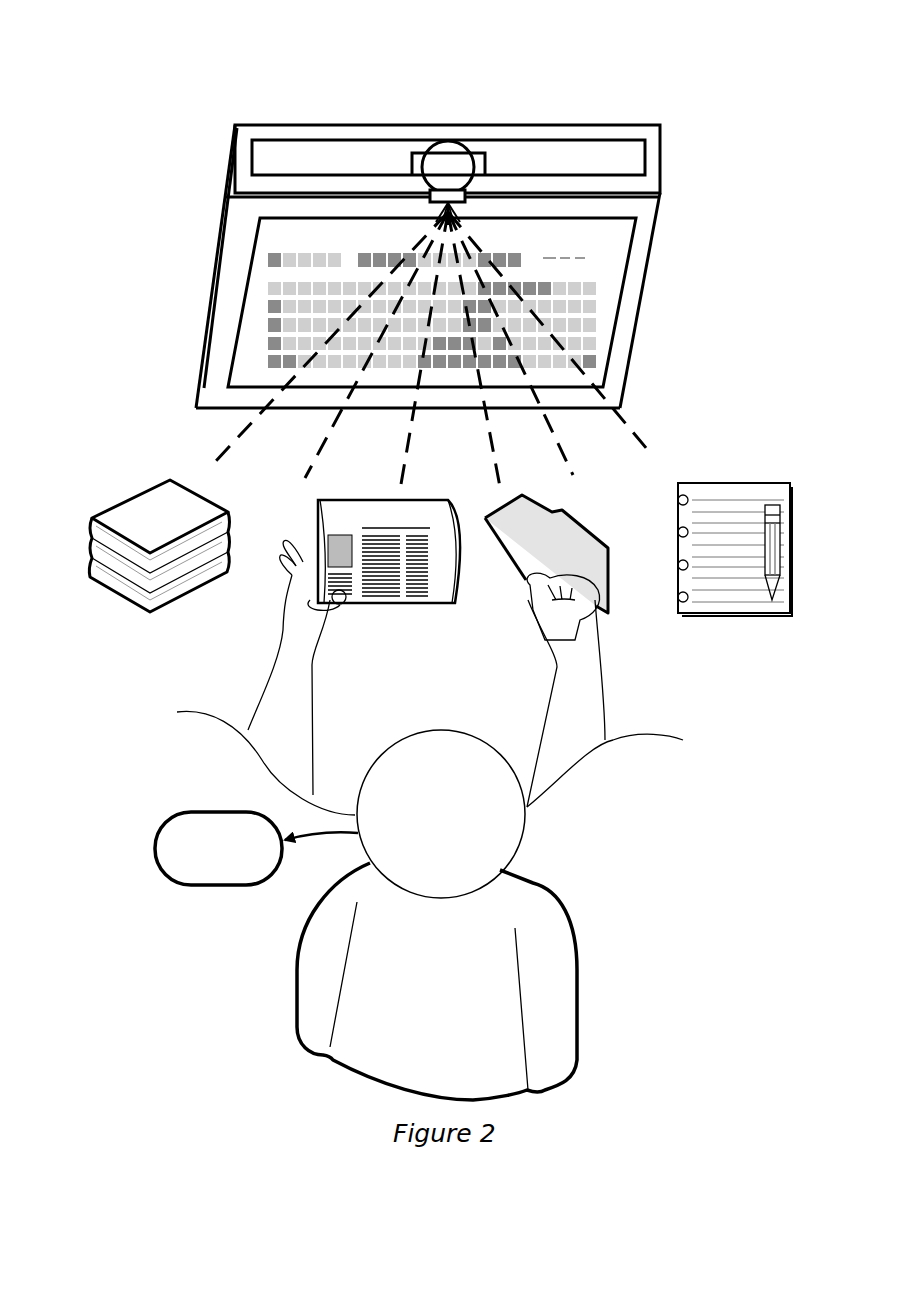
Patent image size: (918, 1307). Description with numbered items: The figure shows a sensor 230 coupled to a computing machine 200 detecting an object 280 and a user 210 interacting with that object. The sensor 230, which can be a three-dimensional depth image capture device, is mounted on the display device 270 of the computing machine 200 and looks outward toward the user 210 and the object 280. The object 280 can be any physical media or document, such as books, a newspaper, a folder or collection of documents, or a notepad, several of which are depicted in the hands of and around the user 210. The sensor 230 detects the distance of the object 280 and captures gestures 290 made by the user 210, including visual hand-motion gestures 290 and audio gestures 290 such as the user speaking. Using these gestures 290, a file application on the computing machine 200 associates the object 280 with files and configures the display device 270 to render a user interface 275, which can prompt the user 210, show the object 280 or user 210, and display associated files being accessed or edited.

The computing machine 200 is at (248, 72).
The user 210 is at (420, 1001).
The sensor 230 is at (443, 143).
The display device 270 is at (652, 83).
The user interface 275 is at (603, 327).
The object 280 is at (182, 462).
The gesture 290 is at (242, 677).